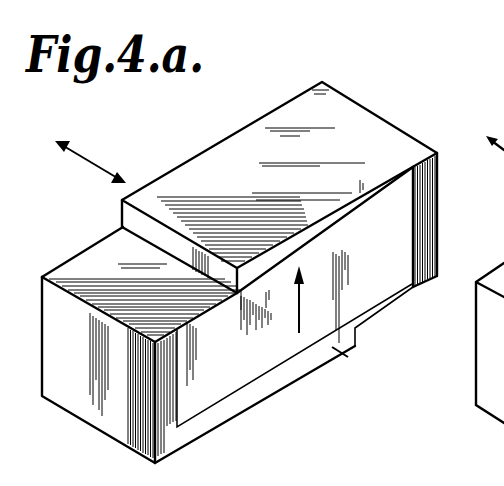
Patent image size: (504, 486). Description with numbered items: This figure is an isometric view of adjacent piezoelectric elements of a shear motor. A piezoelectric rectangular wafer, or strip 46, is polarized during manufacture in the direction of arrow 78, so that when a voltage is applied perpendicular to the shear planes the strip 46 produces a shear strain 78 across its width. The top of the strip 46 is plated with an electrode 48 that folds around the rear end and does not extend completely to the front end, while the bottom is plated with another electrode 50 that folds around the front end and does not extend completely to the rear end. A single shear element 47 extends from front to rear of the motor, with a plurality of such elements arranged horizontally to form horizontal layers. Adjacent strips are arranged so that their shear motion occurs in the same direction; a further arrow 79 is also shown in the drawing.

The piezoelectric strip 46 is at (376, 288).
The shear element 47 is at (287, 97).
The electrode 48 is at (383, 200).
The electrode 50 is at (333, 348).
The shear strain 78 is at (90, 158).
The vertical displacement arrow 79 is at (296, 310).